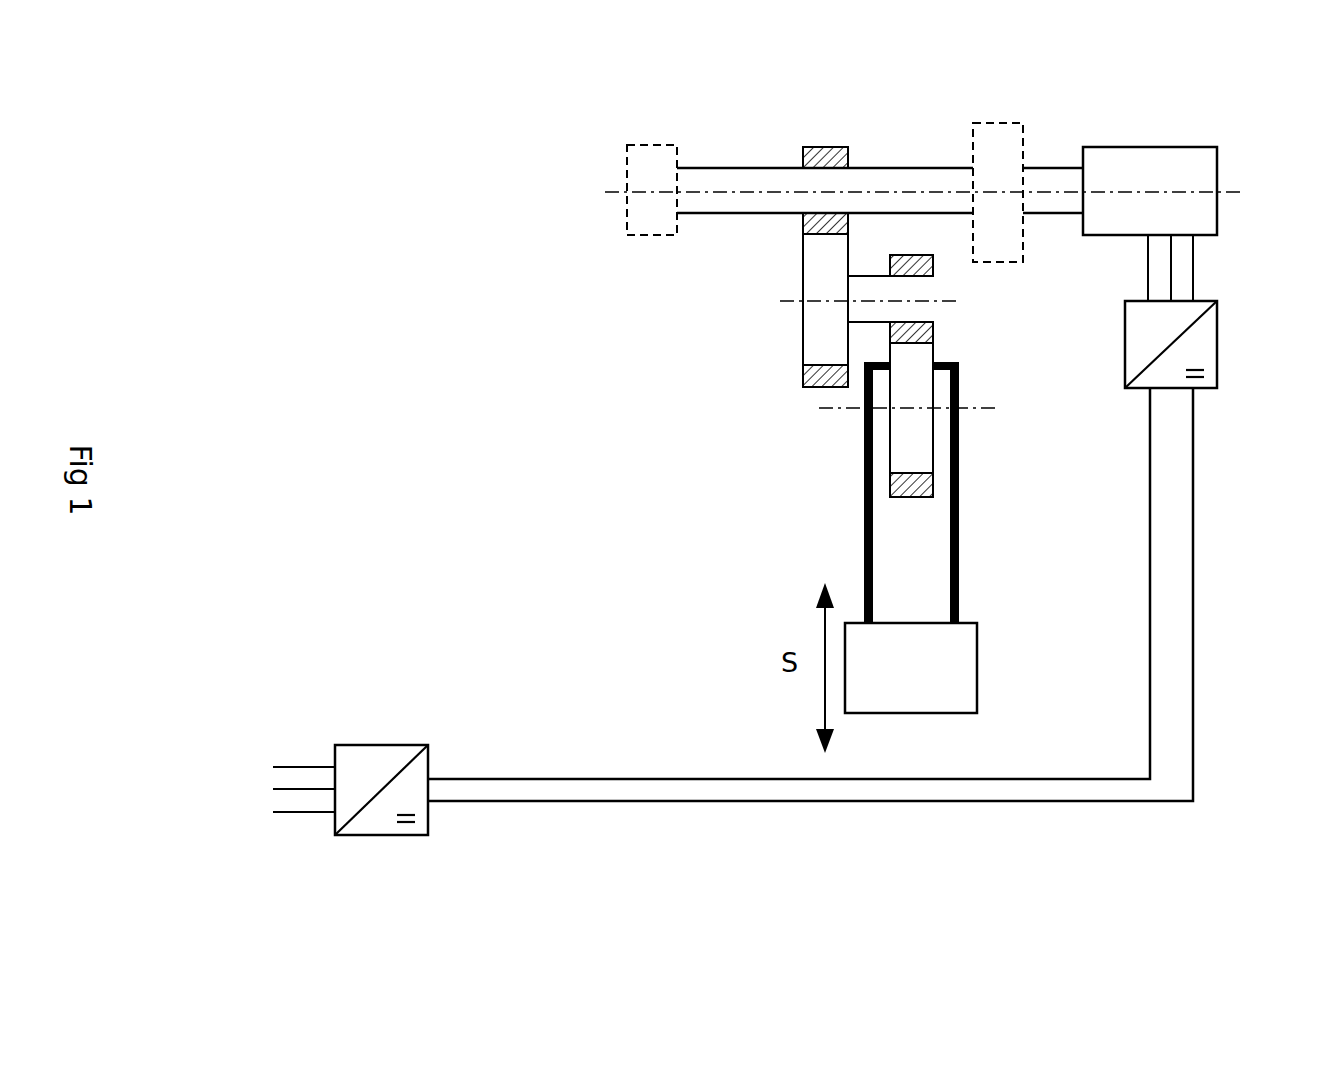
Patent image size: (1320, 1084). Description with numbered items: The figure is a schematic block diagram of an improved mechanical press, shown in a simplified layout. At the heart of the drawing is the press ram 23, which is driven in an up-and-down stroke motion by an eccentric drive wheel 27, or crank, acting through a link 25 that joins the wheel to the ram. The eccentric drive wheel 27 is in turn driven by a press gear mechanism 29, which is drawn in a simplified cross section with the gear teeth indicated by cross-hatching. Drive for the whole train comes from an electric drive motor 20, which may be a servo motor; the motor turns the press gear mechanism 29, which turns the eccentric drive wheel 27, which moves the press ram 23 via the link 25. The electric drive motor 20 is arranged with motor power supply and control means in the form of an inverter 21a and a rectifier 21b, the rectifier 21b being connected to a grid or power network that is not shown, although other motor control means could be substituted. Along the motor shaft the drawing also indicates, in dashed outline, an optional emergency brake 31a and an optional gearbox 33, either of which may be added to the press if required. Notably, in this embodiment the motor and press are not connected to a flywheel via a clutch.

The electric drive motor 20 is at (1204, 217).
The inverter 21a is at (1218, 398).
The rectifier 21b is at (448, 823).
The press ram 23 is at (913, 697).
The link 25 is at (847, 506).
The eccentric drive wheel 27 is at (922, 433).
The press gear mechanism 29 is at (783, 333).
The emergency brake 31a is at (612, 173).
The gearbox 33 is at (1037, 135).